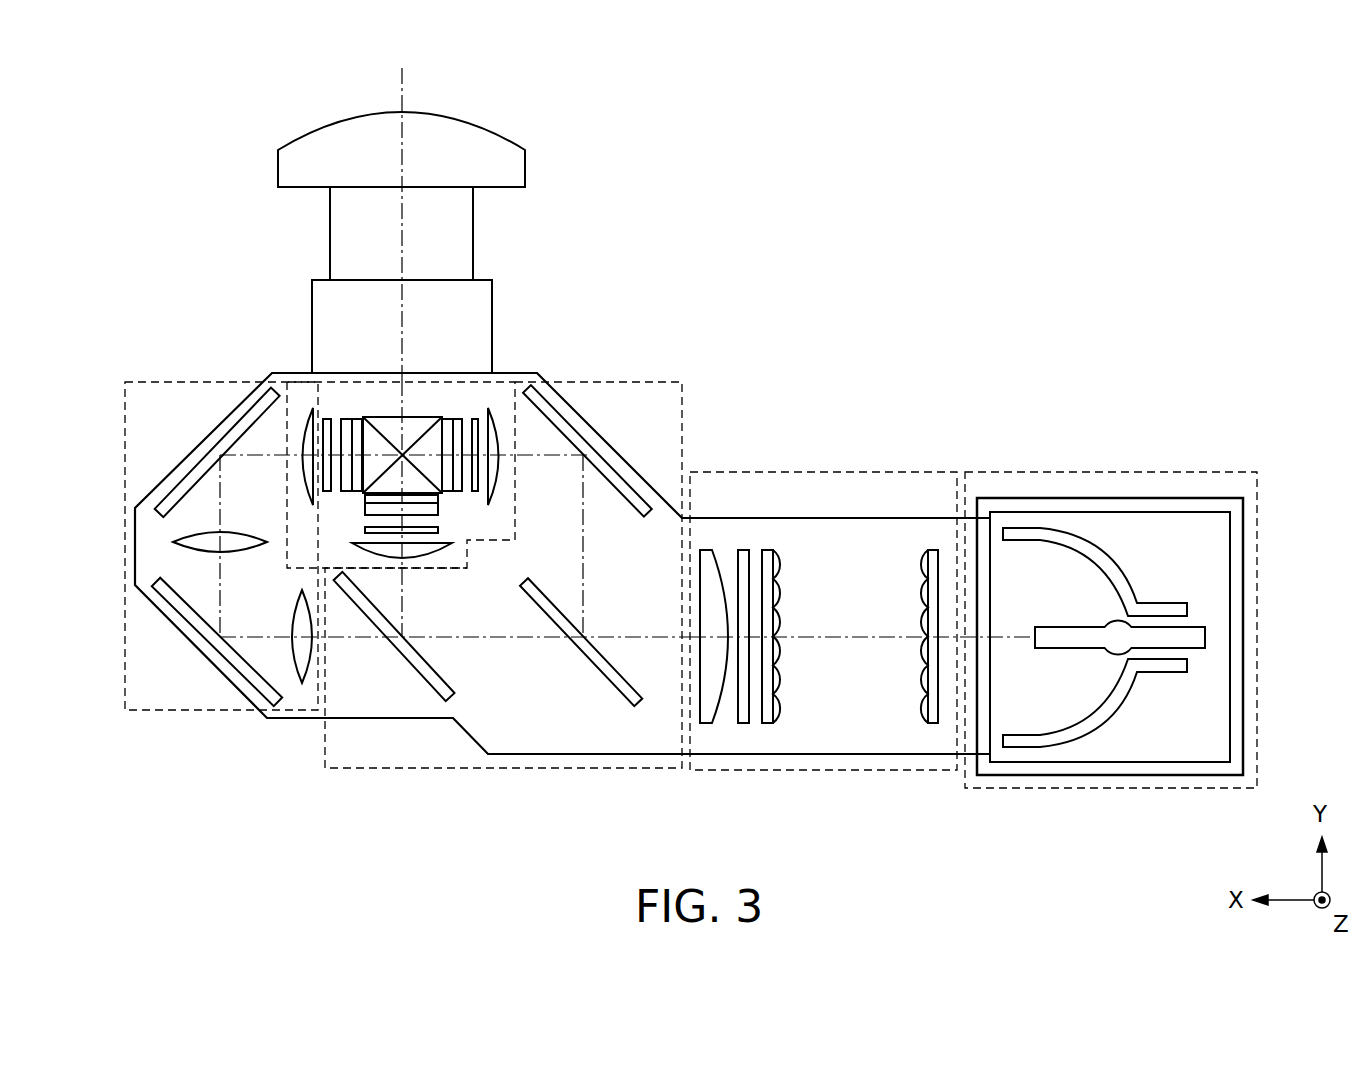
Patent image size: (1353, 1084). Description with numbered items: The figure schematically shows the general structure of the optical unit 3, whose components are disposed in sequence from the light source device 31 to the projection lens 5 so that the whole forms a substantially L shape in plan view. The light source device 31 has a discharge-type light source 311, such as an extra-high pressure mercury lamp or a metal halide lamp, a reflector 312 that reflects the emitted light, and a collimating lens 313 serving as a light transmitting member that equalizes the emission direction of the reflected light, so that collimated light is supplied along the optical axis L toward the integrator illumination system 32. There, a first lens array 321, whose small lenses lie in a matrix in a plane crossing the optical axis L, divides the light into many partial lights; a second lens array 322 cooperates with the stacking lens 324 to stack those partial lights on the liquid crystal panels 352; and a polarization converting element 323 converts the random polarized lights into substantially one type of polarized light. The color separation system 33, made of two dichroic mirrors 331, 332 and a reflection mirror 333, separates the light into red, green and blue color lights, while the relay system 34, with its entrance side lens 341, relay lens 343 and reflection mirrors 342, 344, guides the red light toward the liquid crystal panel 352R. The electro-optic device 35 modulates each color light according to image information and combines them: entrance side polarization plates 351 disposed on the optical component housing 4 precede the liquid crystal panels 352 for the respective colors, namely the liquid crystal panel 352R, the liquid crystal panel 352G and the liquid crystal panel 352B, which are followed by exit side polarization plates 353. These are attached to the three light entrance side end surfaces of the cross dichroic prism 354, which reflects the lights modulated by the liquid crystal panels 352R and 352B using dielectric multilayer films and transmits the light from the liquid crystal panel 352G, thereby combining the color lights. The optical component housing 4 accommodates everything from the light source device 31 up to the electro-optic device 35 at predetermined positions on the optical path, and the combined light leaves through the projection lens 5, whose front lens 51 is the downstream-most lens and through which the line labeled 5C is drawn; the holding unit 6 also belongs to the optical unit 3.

The optical unit 3 is at (667, 241).
The optical component housing 4 is at (408, 722).
The projection lens 5 is at (460, 223).
The optical axis of projection lens 5C is at (404, 80).
The front lens 51 is at (512, 167).
The holding unit 6 is at (482, 295).
The light source device 31 is at (1008, 790).
The light source 311 is at (1078, 640).
The reflector 312 is at (1118, 690).
The collimating lens 313 is at (975, 713).
The integrator illumination system 32 is at (752, 770).
The first lens array 321 is at (930, 560).
The second lens array 322 is at (765, 555).
The polarization converting element 323 is at (742, 555).
The stacking lens 324 is at (703, 560).
The color separation system 33 is at (533, 770).
The dichroic mirror 331 is at (610, 680).
The dichroic mirror 332 is at (432, 678).
The reflection mirror 333 is at (605, 470).
The relay system 34 is at (123, 548).
The entrance side lens 341 is at (302, 665).
The reflection mirror 342 is at (190, 607).
The relay lens 343 is at (232, 545).
The reflection mirror 344 is at (198, 470).
The electro-optic device 35 is at (424, 404).
The entrance side polarization plate 351 is at (326, 418).
The liquid crystal panel 352 is at (401, 467).
The liquid crystal panel for R light 352R is at (346, 418).
The liquid crystal panel for G light 352G is at (435, 508).
The liquid crystal panel for B light 352B is at (458, 417).
The exit side polarization plate 353 is at (357, 418).
The cross dichroic prism 354 is at (397, 417).
The optical axis L is at (845, 642).